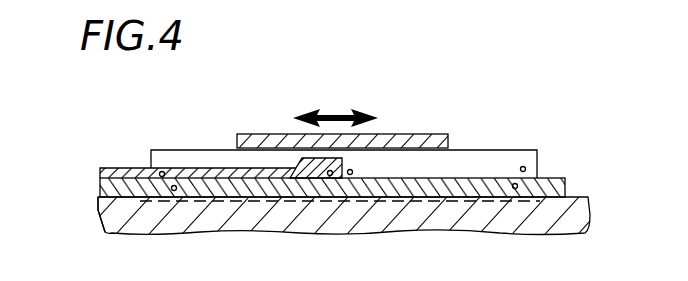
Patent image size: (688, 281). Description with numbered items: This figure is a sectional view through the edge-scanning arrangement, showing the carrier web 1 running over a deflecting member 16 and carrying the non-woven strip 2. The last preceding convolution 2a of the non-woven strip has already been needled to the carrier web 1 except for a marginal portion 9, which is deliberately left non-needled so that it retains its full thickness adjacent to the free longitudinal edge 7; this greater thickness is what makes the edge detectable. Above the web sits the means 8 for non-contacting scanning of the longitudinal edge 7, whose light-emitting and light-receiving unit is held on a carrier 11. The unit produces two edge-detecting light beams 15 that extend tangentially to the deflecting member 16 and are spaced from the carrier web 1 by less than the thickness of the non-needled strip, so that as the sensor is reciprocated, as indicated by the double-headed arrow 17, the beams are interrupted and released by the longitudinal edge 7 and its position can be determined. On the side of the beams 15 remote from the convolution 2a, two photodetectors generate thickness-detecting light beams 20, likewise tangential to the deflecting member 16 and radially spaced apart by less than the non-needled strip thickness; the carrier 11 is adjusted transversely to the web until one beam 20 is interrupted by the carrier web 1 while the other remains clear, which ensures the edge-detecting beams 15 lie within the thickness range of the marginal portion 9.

The carrier web 1 is at (415, 183).
The non-woven strip 2 is at (178, 156).
The convolution of the non-woven strip 2a is at (118, 170).
The free longitudinal edge 7 is at (345, 160).
The means for non-contacting scanning of the longitudinal edge 8 is at (486, 141).
The marginal portion 9 is at (316, 171).
The carrier of the scanning sensor 11 is at (255, 142).
The edge-detecting light beams 15 is at (331, 176).
The deflecting member 16 is at (115, 212).
The double-headed arrow 17 is at (335, 110).
The thickness-detecting light beams 20 is at (162, 177).